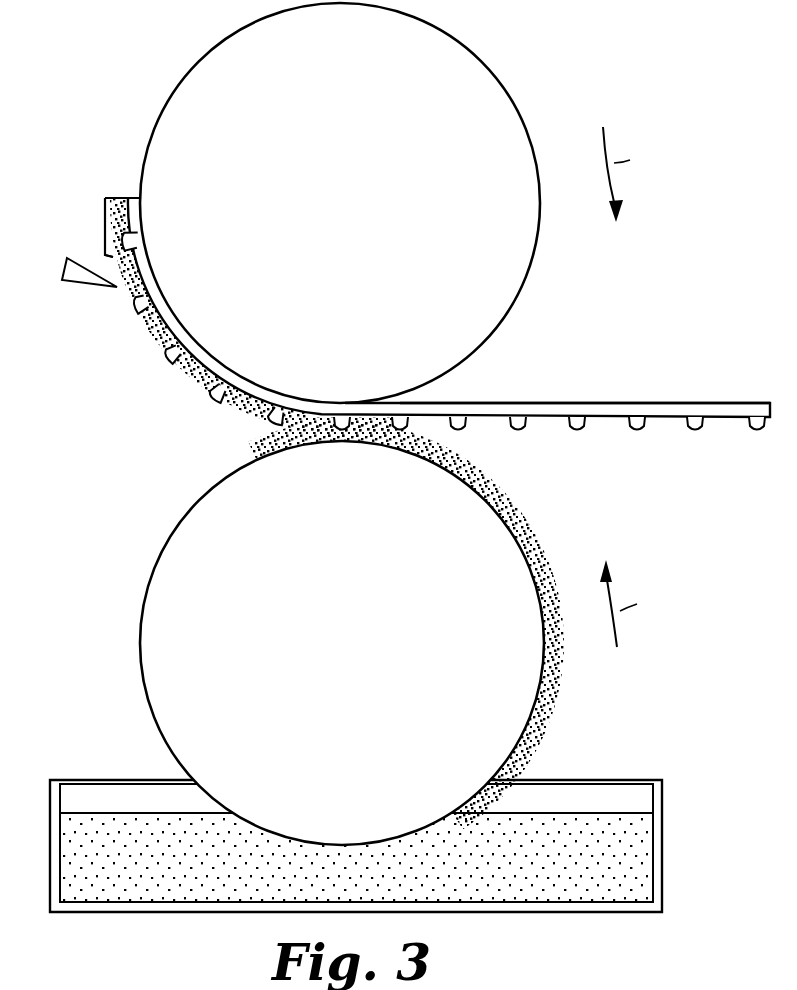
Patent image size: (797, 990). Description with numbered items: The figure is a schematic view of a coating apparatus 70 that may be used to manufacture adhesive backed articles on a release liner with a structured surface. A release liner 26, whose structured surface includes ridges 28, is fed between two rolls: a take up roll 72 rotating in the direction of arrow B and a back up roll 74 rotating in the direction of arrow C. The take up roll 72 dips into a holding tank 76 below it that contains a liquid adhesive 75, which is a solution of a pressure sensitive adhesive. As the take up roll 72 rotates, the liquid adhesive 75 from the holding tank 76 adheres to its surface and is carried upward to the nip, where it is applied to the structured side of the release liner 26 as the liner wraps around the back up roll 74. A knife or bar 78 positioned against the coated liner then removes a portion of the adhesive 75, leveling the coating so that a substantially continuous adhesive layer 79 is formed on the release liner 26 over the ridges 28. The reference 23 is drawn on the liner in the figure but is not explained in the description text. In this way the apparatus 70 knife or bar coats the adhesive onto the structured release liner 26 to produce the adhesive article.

The apparatus 70 is at (96, 153).
The back up roll 74 is at (210, 67).
The take up roll 72 is at (158, 592).
The liquid adhesive 75 is at (160, 350).
The holding tank 76 is at (90, 903).
The knife or bar 78 is at (62, 282).
The adhesive layer 79 is at (105, 214).
The release liner 26 is at (731, 402).
The ridges 28 is at (698, 430).
The belt 23 is at (666, 418).